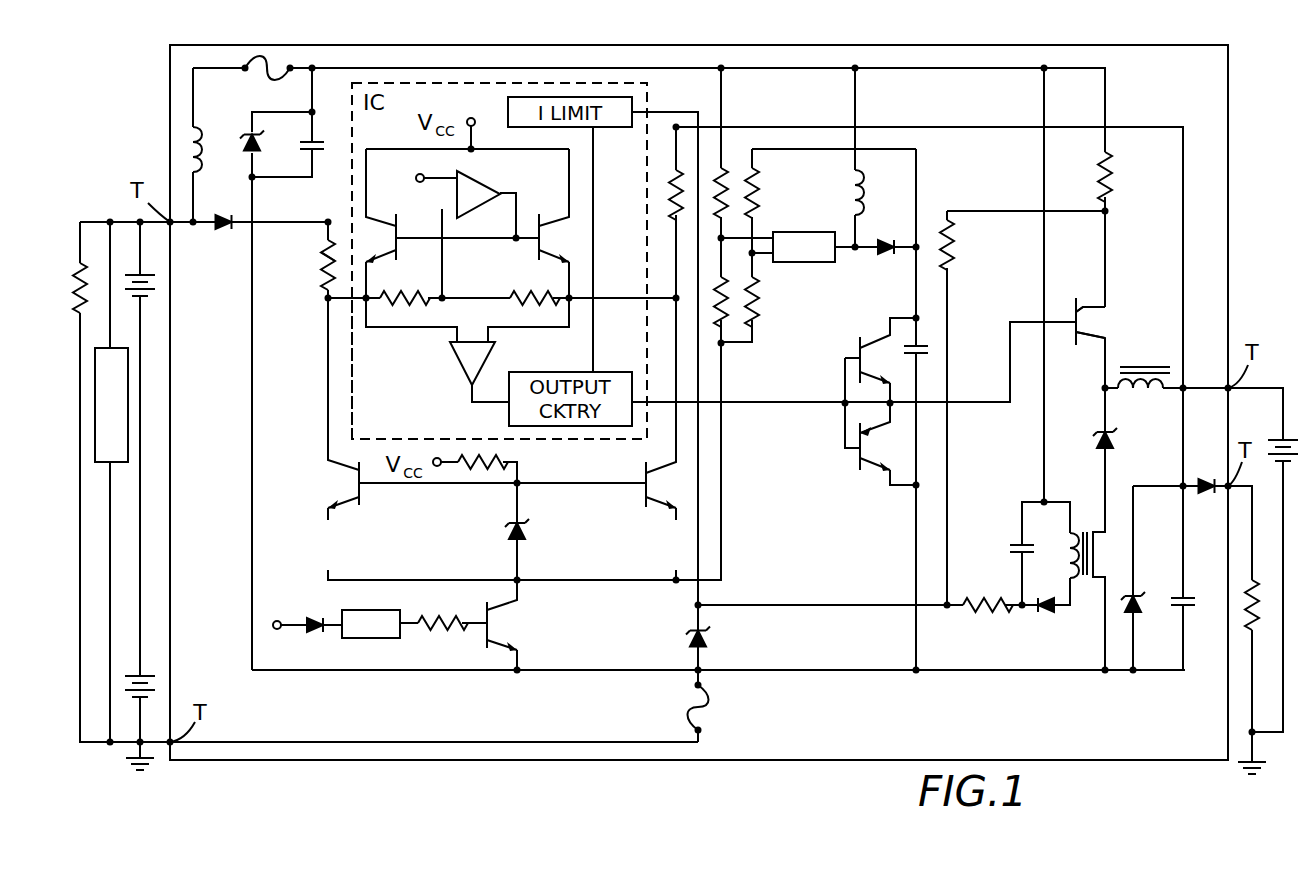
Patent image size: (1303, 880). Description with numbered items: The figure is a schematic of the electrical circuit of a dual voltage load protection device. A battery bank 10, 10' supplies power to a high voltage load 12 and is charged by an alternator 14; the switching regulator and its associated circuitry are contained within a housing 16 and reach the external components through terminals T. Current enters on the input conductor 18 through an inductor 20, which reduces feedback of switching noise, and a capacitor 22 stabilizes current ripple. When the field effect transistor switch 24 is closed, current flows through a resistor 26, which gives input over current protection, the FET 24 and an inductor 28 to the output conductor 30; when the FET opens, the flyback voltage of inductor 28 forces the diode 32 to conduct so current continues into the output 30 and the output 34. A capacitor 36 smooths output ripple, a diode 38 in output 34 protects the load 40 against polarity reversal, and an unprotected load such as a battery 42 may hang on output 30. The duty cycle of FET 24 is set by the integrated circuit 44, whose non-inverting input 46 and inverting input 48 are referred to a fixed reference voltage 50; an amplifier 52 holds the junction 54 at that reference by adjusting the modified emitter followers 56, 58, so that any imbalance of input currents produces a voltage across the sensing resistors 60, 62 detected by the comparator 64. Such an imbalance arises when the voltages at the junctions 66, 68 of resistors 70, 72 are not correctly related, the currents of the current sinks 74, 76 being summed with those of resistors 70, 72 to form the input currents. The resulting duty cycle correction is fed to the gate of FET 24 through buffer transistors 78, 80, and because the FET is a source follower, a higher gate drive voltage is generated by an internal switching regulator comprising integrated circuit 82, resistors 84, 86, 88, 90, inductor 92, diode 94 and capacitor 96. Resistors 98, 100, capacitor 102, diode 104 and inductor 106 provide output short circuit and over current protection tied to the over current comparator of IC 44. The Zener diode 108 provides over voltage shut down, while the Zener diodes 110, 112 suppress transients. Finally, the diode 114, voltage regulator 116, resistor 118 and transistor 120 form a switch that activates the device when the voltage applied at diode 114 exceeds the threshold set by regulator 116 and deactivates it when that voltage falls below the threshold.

The battery bank 10 is at (167, 299).
The battery bank 10' is at (173, 709).
The high voltage load 12 is at (80, 255).
The alternator 14 is at (128, 410).
The housing 16 is at (170, 155).
The input conductor 18 is at (180, 223).
The inductor 20 is at (200, 160).
The capacitor 22 is at (318, 150).
The field effect transistor switch 24 is at (1074, 300).
The resistor 26 is at (1112, 165).
The inductor 28 is at (1160, 390).
The output conductor 30 is at (1198, 388).
The diode 32 is at (1098, 442).
The output 34 is at (1192, 462).
The capacitor 36 is at (1192, 598).
The diode 38 is at (1210, 492).
The load 40 is at (1248, 612).
The battery 42 is at (1268, 450).
The integrated circuit 44 is at (352, 378).
The non-inverting input 46 is at (328, 300).
The inverting input 48 is at (617, 296).
The reference voltage 50 is at (415, 183).
The amplifier 52 is at (485, 180).
The junction 54 is at (440, 295).
The modified emitter follower 56 is at (400, 230).
The modified emitter follower 58 is at (535, 250).
The sensing resistor 60 is at (410, 305).
The sensing resistor 62 is at (538, 305).
The comparator 64 is at (458, 370).
The junction 66 is at (322, 232).
The junction 68 is at (678, 126).
The resistor 70 is at (325, 262).
The resistor 72 is at (668, 210).
The current sink 74 is at (362, 488).
The current sink 76 is at (640, 493).
The buffer transistor 78 is at (858, 348).
The buffer transistor 80 is at (862, 456).
The integrated circuit 82 is at (790, 264).
The resistor 84 is at (725, 182).
The resistor 86 is at (728, 322).
The resistor 88 is at (760, 215).
The resistor 90 is at (762, 300).
The inductor 92 is at (853, 183).
The diode 94 is at (886, 240).
The capacitor 96 is at (925, 352).
The resistor 98 is at (955, 257).
The resistor 100 is at (1000, 612).
The capacitor 102 is at (1008, 550).
The diode 104 is at (1052, 612).
The inductor 106 is at (1082, 535).
The Zener diode 108 is at (708, 640).
The Zener diode 110 is at (248, 138).
The Zener diode 112 is at (1140, 600).
The diode 114 is at (315, 618).
The voltage regulator 116 is at (370, 610).
The resistor 118 is at (460, 630).
The transistor 120 is at (502, 628).